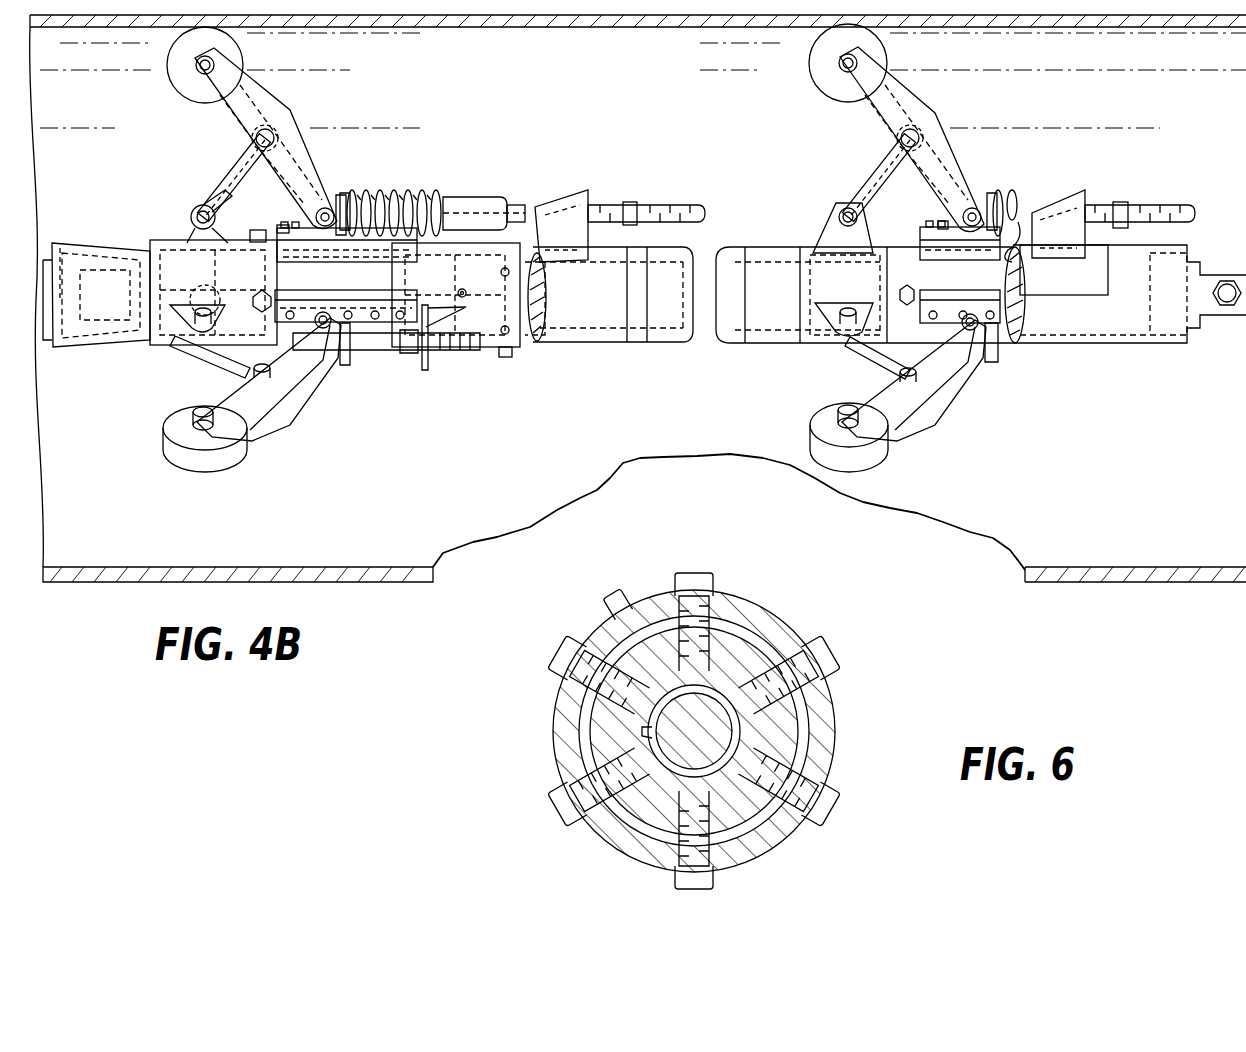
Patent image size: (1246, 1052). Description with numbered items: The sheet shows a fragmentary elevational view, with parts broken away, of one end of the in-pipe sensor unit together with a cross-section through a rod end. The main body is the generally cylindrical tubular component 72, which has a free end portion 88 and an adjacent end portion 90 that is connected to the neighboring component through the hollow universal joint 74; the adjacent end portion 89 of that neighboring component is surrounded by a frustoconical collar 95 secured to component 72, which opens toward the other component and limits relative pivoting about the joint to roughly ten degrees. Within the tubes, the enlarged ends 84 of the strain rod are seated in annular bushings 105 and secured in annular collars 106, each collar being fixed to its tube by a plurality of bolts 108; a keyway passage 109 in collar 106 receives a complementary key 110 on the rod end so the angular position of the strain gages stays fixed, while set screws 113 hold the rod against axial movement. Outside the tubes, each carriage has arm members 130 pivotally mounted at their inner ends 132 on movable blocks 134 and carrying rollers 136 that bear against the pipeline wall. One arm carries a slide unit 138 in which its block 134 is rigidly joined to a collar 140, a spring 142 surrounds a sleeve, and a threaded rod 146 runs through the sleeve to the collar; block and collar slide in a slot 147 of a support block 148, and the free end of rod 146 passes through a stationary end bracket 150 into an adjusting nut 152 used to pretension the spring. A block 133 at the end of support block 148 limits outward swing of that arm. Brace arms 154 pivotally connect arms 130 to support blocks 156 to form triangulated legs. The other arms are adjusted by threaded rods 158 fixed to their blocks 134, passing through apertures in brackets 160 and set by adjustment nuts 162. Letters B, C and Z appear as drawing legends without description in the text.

In FIG. 4B, the component 72 is at (603, 350).
In FIG. 4B, the universal joint 74 is at (131, 232).
In FIG. 4B, the ends 84 is at (543, 292).
In FIG. 6, the ends 84 is at (712, 778).
In FIG. 4B, the free end portion 88 is at (1117, 348).
In FIG. 4B, the end portion 89 is at (62, 240).
In FIG. 4B, the end portion 90 is at (180, 224).
In FIG. 4B, the frustoconical collar 95 is at (96, 245).
In FIG. 4B, the annular bushing 105 is at (538, 328).
In FIG. 6, the annular bushing 105 is at (748, 672).
In FIG. 4B, the annular collar 106 is at (490, 348).
In FIG. 6, the annular collar 106 is at (828, 708).
In FIG. 4B, the bolts 108 is at (516, 228).
In FIG. 6, the bolts 108 is at (692, 585).
In FIG. 6, the keyway passage 109 is at (645, 733).
In FIG. 6, the key 110 is at (668, 732).
In FIG. 4B, the set screw 113 is at (462, 289).
In FIG. 6, the set screw 113 is at (626, 598).
In FIG. 4B, the arm member 130 is at (288, 112).
In FIG. 4B, the inner ends 132 is at (326, 210).
In FIG. 4B, the block 133 is at (276, 223).
In FIG. 4B, the movable block 134 is at (346, 192).
In FIG. 4B, the roller 136 is at (242, 58).
In FIG. 4B, the slide unit 138 is at (421, 163).
In FIG. 4B, the collar 140 is at (352, 195).
In FIG. 4B, the spring 142 is at (440, 192).
In FIG. 4B, the threaded rod 146 is at (545, 200).
In FIG. 4B, the slot 147 is at (282, 228).
In FIG. 4B, the support block 148 is at (352, 278).
In FIG. 4B, the stationary end bracket 150 is at (590, 195).
In FIG. 4B, the adjusting nut 152 is at (640, 204).
In FIG. 4B, the brace arm 154 is at (232, 170).
In FIG. 4B, the support block 156 is at (195, 208).
In FIG. 4B, the threaded rod 158 is at (448, 355).
In FIG. 4B, the bracket 160 is at (450, 275).
In FIG. 4B, the adjustment nut 162 is at (424, 370).
In FIG. 4B, the point B is at (207, 298).
In FIG. 4B, the body C is at (838, 283).
In FIG. 4B, the axis Z is at (207, 455).